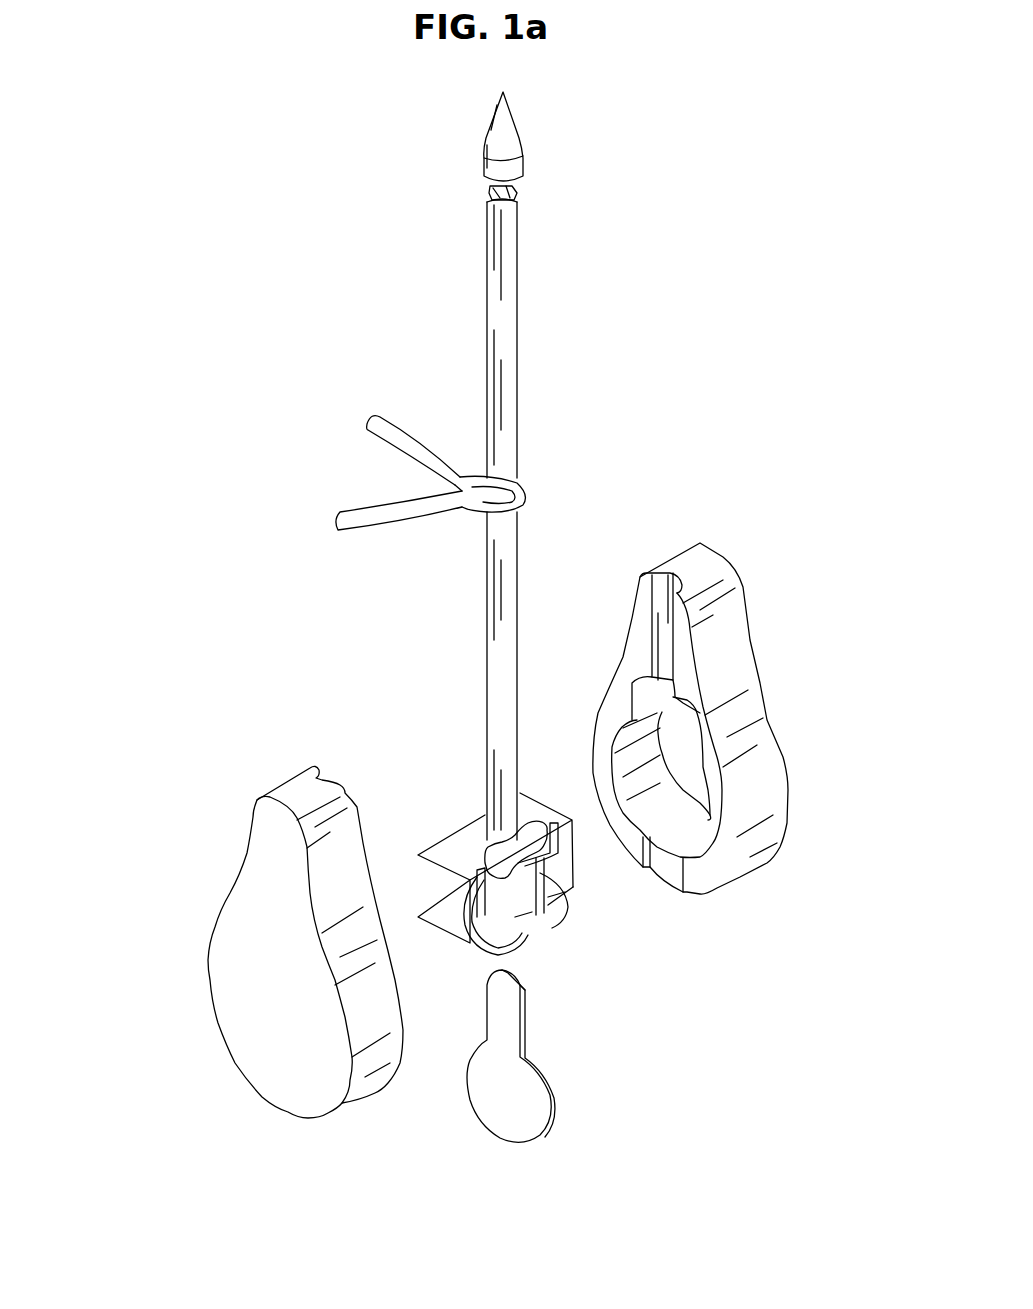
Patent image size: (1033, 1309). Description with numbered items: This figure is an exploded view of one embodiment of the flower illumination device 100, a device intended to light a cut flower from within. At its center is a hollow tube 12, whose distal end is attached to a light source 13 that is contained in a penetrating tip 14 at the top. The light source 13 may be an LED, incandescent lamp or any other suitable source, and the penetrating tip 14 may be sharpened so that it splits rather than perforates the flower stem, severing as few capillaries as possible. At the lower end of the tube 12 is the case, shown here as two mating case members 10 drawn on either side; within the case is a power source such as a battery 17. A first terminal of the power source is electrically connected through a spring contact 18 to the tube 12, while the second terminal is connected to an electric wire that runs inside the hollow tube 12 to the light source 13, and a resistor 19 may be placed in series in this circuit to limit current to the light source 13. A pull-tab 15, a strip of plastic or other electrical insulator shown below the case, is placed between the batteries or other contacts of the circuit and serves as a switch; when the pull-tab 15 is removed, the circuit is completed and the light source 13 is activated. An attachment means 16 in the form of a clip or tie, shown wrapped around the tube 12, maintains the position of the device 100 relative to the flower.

The flower illumination device 100 is at (252, 591).
The mating case members 10 is at (717, 652).
The tube 12 is at (510, 432).
The light source 13 is at (493, 188).
The penetrating tip 14 is at (508, 135).
The pull-tab 15 is at (535, 1102).
The attachment means 16 is at (420, 462).
The battery 17 is at (518, 913).
The spring contact 18 is at (532, 815).
The resistor 19 is at (485, 845).